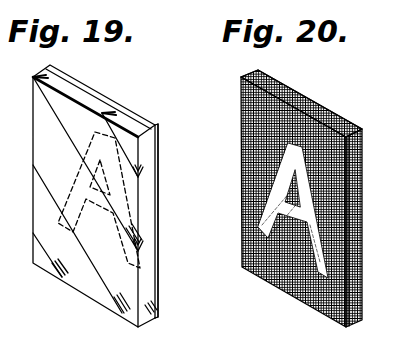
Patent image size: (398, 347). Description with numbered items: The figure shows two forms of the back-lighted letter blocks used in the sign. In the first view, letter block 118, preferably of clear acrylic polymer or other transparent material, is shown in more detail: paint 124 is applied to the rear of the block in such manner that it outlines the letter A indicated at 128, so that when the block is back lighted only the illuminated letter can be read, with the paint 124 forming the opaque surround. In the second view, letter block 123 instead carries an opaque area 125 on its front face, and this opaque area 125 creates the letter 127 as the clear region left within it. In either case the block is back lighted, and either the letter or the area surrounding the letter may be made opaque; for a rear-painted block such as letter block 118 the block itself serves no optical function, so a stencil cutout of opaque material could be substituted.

In FIG. 19, the letter block 118 is at (87, 273).
In FIG. 19, the letter A 128 is at (113, 137).
In FIG. 19, the paint 124 is at (159, 183).
In FIG. 20, the letter block 123 is at (318, 103).
In FIG. 20, the opaque area 125 is at (292, 285).
In FIG. 20, the letter 127 is at (262, 224).